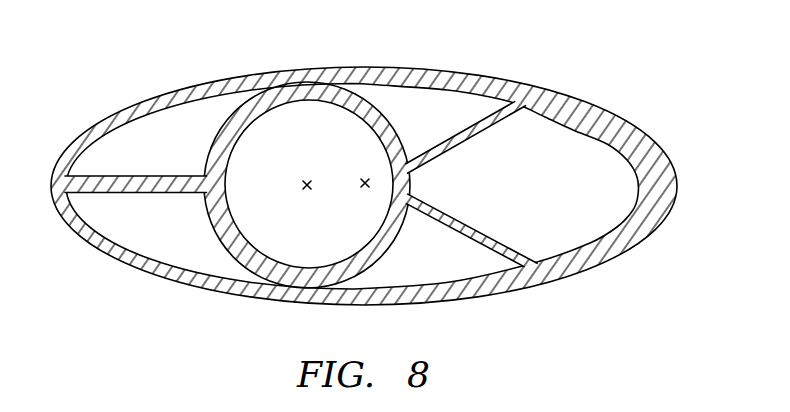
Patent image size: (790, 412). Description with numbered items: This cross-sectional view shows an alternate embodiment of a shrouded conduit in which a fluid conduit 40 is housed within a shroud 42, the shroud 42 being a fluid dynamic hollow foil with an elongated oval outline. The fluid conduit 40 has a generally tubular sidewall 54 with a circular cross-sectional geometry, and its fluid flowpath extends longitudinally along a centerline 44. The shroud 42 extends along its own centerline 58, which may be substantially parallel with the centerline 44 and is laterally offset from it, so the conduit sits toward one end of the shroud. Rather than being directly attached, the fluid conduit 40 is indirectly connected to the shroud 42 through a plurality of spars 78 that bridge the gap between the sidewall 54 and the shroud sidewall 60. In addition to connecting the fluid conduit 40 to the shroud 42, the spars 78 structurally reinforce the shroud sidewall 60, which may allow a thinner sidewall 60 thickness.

The fluid conduit 40 is at (377, 165).
The shroud 42 is at (642, 121).
The centerline 44 is at (306, 177).
The tubular sidewall 54 is at (236, 122).
The centerline 58 is at (364, 190).
The shroud sidewall 60 is at (565, 98).
The spars 78 is at (141, 193).